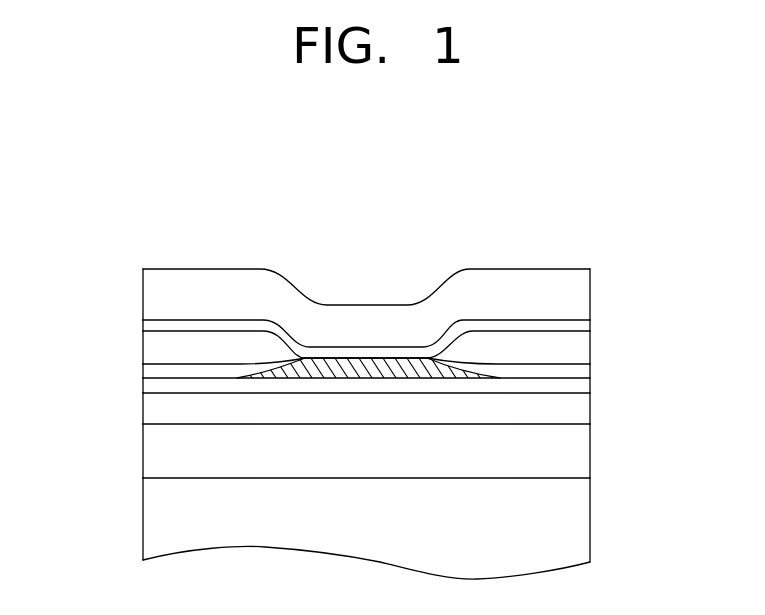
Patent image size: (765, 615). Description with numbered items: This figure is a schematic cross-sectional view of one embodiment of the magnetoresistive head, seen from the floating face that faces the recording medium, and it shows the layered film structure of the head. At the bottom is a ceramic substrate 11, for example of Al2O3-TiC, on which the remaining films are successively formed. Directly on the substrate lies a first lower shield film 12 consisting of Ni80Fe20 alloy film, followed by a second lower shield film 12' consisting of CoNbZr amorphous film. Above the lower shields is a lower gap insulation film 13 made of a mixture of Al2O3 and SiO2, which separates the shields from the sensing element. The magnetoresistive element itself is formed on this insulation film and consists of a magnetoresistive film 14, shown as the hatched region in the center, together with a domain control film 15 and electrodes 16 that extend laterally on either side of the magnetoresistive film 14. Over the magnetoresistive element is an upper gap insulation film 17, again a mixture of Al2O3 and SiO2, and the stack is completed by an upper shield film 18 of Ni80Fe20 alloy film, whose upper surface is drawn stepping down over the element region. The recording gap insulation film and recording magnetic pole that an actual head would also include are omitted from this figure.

The ceramic substrate 11 is at (582, 523).
The first lower shield film 12 is at (420, 468).
The second lower shield film 12' is at (423, 423).
The lower gap insulation film 13 is at (578, 388).
The magnetoresistive film 14 is at (350, 370).
The domain control film 15 is at (148, 370).
The electrodes 16 is at (158, 342).
The upper gap insulation film 17 is at (580, 325).
The upper shield film 18 is at (580, 295).